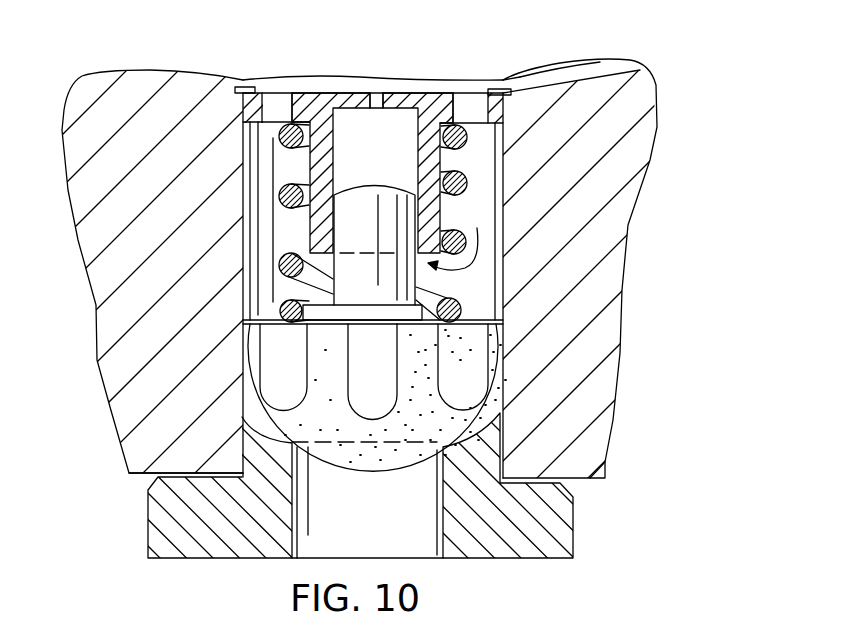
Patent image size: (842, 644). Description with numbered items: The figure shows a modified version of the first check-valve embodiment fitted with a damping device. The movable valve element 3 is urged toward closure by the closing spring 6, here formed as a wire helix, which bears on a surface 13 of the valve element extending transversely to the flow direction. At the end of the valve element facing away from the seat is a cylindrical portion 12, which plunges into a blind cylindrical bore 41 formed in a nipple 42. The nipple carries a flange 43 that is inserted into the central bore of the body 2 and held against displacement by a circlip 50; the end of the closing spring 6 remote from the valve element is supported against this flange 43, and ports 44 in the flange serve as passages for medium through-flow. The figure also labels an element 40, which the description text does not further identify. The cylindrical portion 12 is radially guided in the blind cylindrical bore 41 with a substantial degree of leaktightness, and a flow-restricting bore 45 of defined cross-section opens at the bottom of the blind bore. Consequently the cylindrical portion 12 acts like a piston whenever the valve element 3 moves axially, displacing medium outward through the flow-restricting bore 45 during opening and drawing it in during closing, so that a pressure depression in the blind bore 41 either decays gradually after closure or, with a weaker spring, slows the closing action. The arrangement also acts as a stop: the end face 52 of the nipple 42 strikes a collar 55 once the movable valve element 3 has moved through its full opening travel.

The body 2 is at (565, 382).
The movable valve element 3 is at (327, 380).
The closing spring 6 is at (290, 125).
The cylindrical portion 12 is at (370, 220).
The surface 13 is at (442, 292).
The spring retainer plate 40 is at (473, 375).
The blind cylindrical bore 41 is at (360, 150).
The nipple 42 is at (455, 76).
The flange 43 is at (597, 74).
The ports 44 is at (273, 110).
The flow-restricting bore 45 is at (377, 100).
The circlip 50 is at (503, 110).
The end face 52 is at (458, 235).
The collar 55 is at (312, 303).